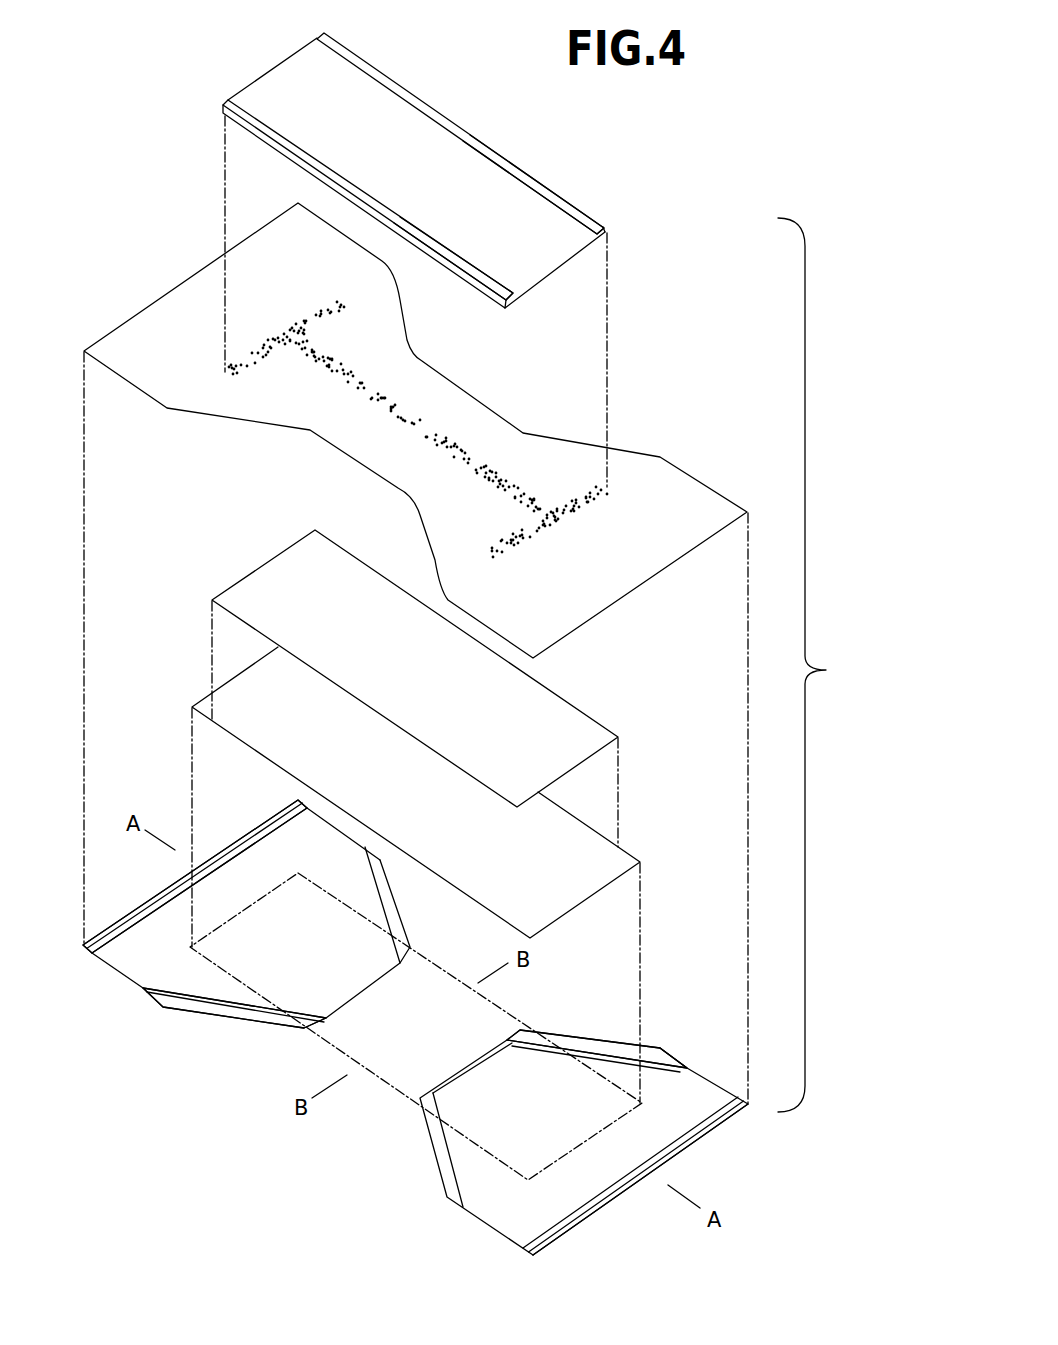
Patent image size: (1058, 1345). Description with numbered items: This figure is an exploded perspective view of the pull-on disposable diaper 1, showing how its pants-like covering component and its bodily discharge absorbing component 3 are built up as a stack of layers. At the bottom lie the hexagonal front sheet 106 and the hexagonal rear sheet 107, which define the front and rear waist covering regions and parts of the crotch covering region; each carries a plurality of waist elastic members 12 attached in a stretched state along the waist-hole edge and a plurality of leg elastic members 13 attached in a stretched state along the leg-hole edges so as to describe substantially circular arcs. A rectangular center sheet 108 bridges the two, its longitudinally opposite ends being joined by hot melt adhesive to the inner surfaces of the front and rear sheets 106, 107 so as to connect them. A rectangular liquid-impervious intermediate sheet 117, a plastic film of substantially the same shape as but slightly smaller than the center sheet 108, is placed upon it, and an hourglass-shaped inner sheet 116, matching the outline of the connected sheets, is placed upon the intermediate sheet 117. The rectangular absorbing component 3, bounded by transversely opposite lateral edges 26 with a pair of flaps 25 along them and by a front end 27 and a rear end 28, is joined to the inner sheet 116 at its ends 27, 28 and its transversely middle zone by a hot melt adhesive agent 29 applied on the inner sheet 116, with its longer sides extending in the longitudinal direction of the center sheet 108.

The pull-on disposable diaper 1 is at (813, 665).
The bodily discharge absorbing component 3 is at (425, 172).
The rear end 28 is at (425, 173).
The flap 25 is at (413, 172).
The lateral edge 26 is at (546, 208).
The front end 27 is at (567, 258).
The hot melt adhesive agent 29 is at (412, 422).
The inner sheet 116 is at (421, 430).
The intermediate sheet 117 is at (581, 712).
The center sheet 108 is at (591, 834).
The rear sheet 107 is at (112, 972).
The front sheet 106 is at (486, 1227).
The waist elastic member 12 is at (150, 914).
The leg elastic member 13 is at (227, 1005).